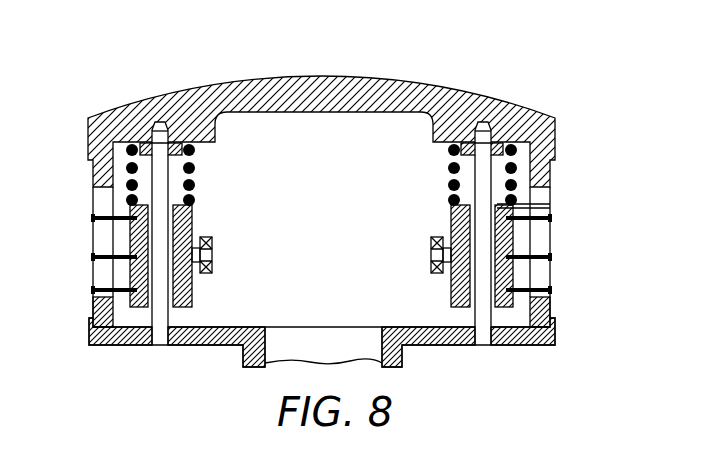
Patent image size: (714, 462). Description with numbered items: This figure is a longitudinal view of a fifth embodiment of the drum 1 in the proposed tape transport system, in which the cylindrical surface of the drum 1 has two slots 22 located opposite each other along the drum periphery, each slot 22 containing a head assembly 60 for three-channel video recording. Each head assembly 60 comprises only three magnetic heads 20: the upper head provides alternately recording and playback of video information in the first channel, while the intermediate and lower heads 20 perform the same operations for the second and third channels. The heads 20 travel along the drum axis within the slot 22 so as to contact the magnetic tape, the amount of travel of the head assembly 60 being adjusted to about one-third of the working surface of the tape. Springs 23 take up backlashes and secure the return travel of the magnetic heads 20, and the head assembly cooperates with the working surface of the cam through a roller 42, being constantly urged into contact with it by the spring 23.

The drum 1 is at (130, 335).
The magnetic heads 20 is at (93, 289).
The slots 22 is at (102, 203).
The springs 23 is at (452, 169).
The roller 42 is at (432, 270).
The head assembly 60 is at (510, 208).